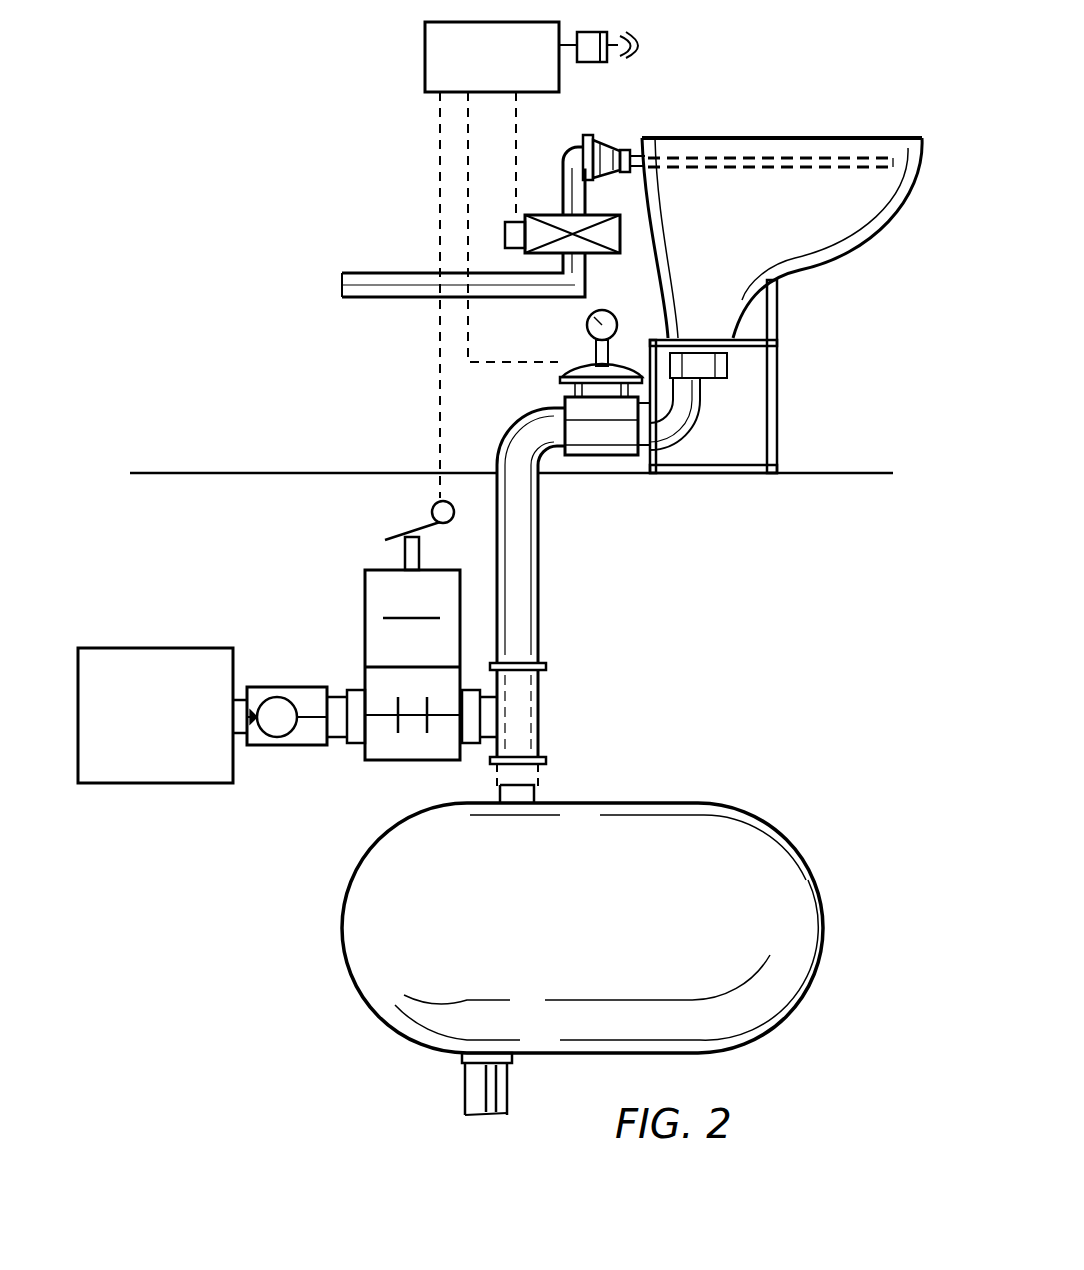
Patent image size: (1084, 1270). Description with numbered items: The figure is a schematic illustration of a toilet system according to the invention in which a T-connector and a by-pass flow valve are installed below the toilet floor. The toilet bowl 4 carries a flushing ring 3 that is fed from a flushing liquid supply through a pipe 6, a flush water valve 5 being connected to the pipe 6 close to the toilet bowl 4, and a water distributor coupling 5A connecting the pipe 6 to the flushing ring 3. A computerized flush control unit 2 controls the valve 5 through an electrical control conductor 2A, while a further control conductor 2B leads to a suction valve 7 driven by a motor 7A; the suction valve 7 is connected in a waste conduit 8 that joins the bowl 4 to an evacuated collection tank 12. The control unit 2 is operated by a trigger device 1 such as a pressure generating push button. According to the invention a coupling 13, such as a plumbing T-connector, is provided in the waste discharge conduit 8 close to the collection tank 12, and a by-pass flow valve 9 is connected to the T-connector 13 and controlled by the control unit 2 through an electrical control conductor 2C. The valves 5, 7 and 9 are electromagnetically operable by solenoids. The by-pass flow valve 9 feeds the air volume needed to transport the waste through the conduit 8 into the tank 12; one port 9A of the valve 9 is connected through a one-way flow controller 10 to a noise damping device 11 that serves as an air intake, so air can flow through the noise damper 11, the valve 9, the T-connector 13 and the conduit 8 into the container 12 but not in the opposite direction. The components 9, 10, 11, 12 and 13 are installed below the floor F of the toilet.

The trigger device 1 is at (638, 52).
The flush control unit (FCU) 2 is at (438, 66).
The electrical control conductor 2A is at (516, 126).
The control conductor 2B is at (468, 126).
The electrical control conductor 2C is at (438, 126).
The flushing ring 3 is at (702, 157).
The toilet bowl 4 is at (792, 218).
The flush water valve 5 is at (525, 222).
The water distributor coupling 5A is at (608, 152).
The pipe 6 is at (350, 273).
The suction valve 7 is at (590, 458).
The motor 7A is at (610, 318).
The waste conduit 8 is at (515, 540).
The by-pass flow valve 9 is at (385, 592).
The port 9A is at (357, 742).
The one-way flow controller 10 is at (303, 687).
The noise damping device 11 is at (200, 762).
The collection tank 12 is at (690, 833).
The coupling 13 is at (532, 702).
The floor F is at (342, 472).